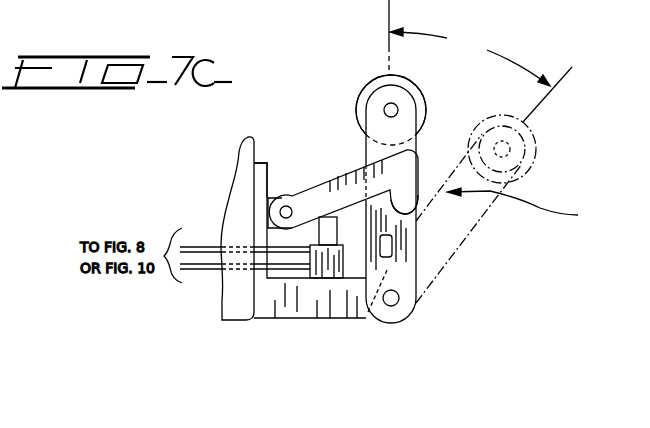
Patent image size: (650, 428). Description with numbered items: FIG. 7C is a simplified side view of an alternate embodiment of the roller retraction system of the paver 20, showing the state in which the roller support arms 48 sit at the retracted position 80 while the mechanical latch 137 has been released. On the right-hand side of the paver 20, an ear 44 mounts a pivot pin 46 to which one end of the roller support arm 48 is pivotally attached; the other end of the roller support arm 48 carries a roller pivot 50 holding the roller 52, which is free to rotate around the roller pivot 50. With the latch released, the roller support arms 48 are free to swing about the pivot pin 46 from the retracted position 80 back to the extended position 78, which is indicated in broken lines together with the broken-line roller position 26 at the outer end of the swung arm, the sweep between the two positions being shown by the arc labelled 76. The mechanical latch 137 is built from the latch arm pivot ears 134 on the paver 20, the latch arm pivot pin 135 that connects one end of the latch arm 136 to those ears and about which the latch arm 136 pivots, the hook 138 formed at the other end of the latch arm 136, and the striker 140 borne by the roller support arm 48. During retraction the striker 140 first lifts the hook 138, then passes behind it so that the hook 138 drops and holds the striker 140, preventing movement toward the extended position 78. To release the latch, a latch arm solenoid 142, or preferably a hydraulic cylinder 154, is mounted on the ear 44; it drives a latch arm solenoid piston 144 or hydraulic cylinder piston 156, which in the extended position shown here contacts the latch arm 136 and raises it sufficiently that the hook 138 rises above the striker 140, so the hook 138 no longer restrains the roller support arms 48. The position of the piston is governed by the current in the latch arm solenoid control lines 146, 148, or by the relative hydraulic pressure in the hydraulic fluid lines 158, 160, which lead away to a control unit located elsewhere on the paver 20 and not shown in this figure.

The paver 20 is at (248, 183).
The roller (second position) 26 is at (510, 154).
The ear 44 is at (312, 320).
The pivot pin 46 is at (400, 323).
The roller support arm 48 is at (366, 153).
The roller pivot 50 is at (386, 103).
The roller 52 is at (491, 118).
The angle of rotation arrow 76 is at (470, 57).
The extended position 78 is at (561, 94).
The retracted position 80 is at (374, 37).
The latch arm pivot ear 134 is at (267, 162).
The latch arm pivot pin 135 is at (287, 196).
The latch arm 136 is at (347, 174).
The mechanical latch 137 is at (612, 225).
The hook 138 is at (408, 232).
The striker 140 is at (396, 247).
The latch arm solenoid 142 is at (364, 308).
The hydraulic cylinder 154 is at (340, 236).
The latch arm solenoid piston 144 is at (373, 306).
The hydraulic cylinder piston 156 is at (345, 266).
The latch arm solenoid control line 146 is at (214, 227).
The hydraulic fluid line 158 is at (205, 246).
The latch arm solenoid control line 148 is at (229, 297).
The hydraulic fluid line 160 is at (198, 271).